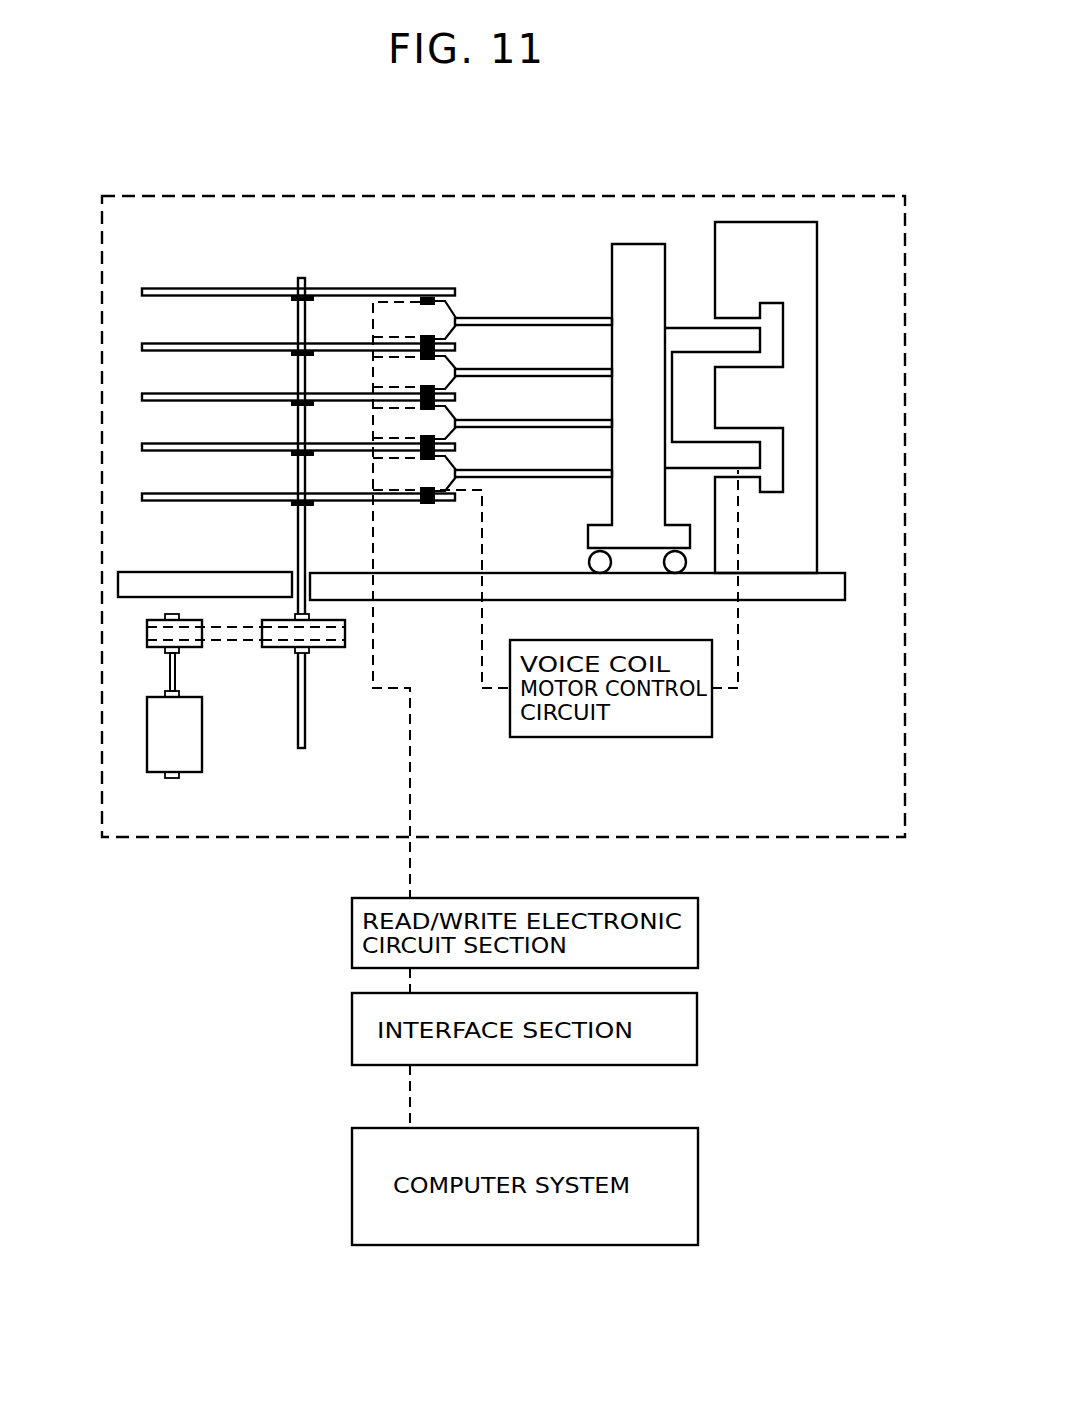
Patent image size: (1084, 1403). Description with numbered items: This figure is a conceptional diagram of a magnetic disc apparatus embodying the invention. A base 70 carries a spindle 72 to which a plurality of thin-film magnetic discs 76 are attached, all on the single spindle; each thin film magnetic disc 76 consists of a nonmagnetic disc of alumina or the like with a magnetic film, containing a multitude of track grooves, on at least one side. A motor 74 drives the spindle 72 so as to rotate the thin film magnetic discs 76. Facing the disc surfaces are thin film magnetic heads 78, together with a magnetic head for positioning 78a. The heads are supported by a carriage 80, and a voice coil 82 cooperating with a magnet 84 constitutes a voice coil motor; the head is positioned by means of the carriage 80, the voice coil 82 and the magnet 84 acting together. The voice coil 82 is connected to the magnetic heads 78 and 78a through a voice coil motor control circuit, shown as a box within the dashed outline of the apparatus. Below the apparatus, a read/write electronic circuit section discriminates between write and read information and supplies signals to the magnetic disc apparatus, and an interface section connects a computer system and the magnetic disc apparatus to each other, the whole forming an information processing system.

The base 70 is at (447, 601).
The spindle 72 is at (300, 540).
The motor 74 is at (202, 735).
The thin-film magnetic disc 76 is at (358, 290).
The thin film magnetic head 78 is at (445, 393).
The magnetic head for positioning 78a is at (432, 497).
The carriage 80 is at (636, 254).
The voice coil 82 is at (725, 450).
The magnet 84 is at (780, 222).